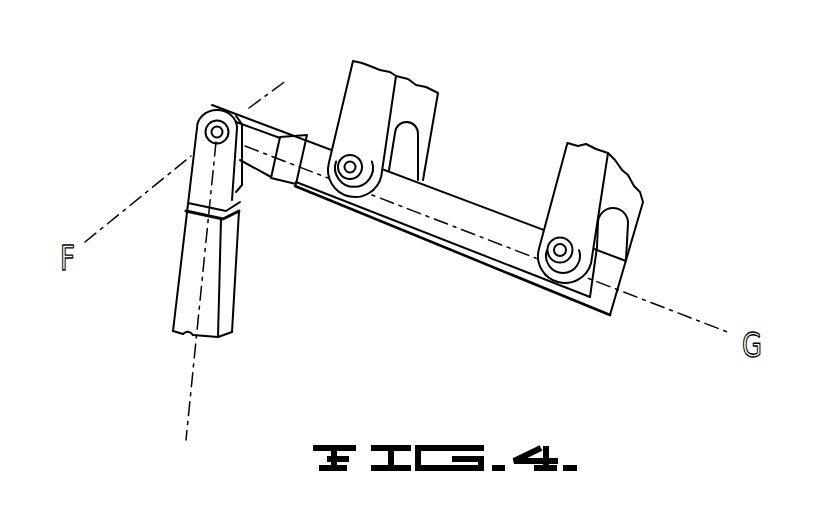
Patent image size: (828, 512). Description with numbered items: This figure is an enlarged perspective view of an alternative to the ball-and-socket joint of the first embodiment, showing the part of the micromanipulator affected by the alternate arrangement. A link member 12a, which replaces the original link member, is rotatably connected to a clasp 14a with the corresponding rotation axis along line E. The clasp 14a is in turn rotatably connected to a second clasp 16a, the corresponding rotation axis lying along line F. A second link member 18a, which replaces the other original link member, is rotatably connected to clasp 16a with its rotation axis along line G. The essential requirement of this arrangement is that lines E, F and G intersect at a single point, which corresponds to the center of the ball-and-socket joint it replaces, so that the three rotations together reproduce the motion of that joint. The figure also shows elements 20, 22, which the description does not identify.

The link member 12a is at (233, 304).
The clasp 14a is at (190, 176).
The clasp 16a is at (270, 118).
The link member 18a is at (451, 258).
The clevis bracket 20 is at (440, 100).
The clevis bracket 22 is at (643, 212).